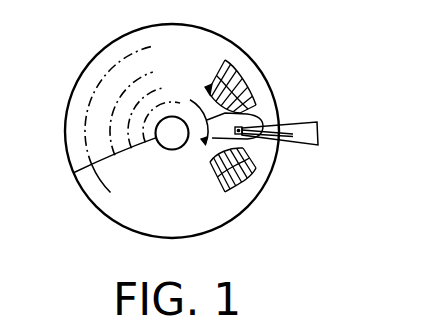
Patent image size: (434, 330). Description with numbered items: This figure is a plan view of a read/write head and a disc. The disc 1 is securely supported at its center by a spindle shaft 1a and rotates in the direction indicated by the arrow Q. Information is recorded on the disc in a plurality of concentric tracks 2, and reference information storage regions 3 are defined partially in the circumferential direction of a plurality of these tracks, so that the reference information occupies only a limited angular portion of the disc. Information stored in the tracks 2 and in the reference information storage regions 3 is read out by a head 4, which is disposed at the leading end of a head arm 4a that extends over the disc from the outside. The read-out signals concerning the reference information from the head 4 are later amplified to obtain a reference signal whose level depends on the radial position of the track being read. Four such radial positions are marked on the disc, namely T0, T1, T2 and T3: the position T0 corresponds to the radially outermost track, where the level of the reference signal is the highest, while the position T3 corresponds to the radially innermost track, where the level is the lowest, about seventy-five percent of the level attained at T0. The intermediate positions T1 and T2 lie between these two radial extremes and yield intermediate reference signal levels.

The disc 1 is at (74, 86).
The spindle shaft 1a is at (74, 173).
The tracks 2 is at (231, 66).
The reference information storage regions 3 is at (257, 122).
The head 4 is at (287, 148).
The head arm 4a is at (303, 121).
The arrow indicating direction of rotation Q is at (192, 114).
The radial position of radially outermost track T0 is at (105, 188).
The radial position of track T1 is at (113, 158).
The radial position of track T2 is at (133, 152).
The radial position of radially innermost track T3 is at (147, 146).